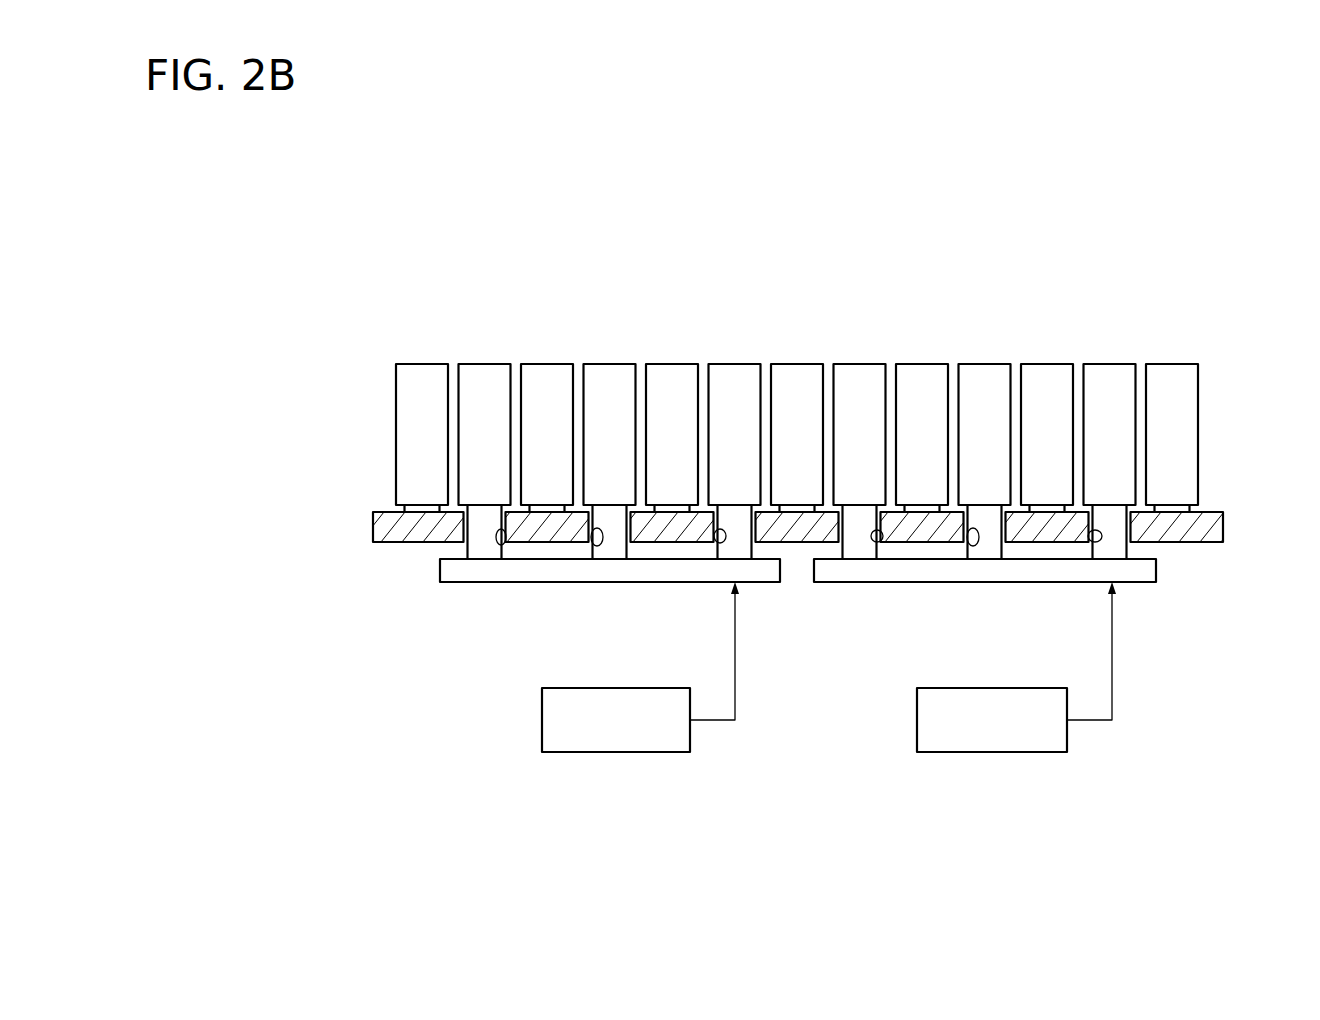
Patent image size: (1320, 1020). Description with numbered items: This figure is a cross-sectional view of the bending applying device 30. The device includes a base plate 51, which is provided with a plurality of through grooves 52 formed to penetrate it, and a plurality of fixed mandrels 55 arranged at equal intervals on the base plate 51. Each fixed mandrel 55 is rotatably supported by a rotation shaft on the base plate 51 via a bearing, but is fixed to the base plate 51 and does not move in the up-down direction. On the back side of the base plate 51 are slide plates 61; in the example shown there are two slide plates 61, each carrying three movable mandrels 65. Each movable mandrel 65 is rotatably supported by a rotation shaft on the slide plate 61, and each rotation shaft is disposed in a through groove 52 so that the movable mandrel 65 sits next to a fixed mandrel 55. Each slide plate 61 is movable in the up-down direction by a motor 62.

The bending applying device 30 is at (425, 219).
The base plate 51 is at (1205, 510).
The through groove 52 is at (502, 545).
The fixed mandrel 55 is at (420, 388).
The slide plate 61 is at (440, 583).
The motor 62 is at (616, 752).
The movable mandrel 65 is at (483, 400).